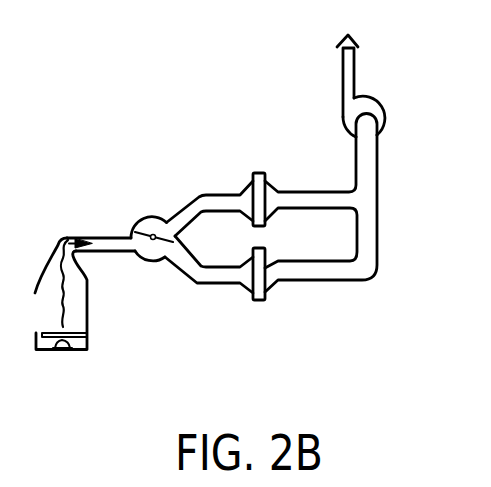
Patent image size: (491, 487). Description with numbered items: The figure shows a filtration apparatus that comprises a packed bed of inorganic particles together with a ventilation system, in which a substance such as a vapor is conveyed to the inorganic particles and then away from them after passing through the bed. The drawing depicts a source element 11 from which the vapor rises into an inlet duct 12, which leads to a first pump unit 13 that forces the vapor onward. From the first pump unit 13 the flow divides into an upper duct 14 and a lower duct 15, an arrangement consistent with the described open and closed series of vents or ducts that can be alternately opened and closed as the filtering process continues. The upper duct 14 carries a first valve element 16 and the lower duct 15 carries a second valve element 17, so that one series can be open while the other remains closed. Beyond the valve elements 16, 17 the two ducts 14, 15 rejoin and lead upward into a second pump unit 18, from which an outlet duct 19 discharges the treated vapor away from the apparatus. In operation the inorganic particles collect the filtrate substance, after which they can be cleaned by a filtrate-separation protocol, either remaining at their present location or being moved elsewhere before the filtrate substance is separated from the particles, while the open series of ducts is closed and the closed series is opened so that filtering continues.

The smoke source with hood and container 11 is at (88, 322).
The inlet pipe 12 is at (107, 237).
The pump 13 is at (157, 260).
The upper branch line 14 is at (213, 193).
The lower branch line 15 is at (217, 283).
The upper valve 16 is at (258, 173).
The lower valve 17 is at (258, 300).
The outlet pump 18 is at (388, 123).
The outlet pipe 19 is at (357, 70).